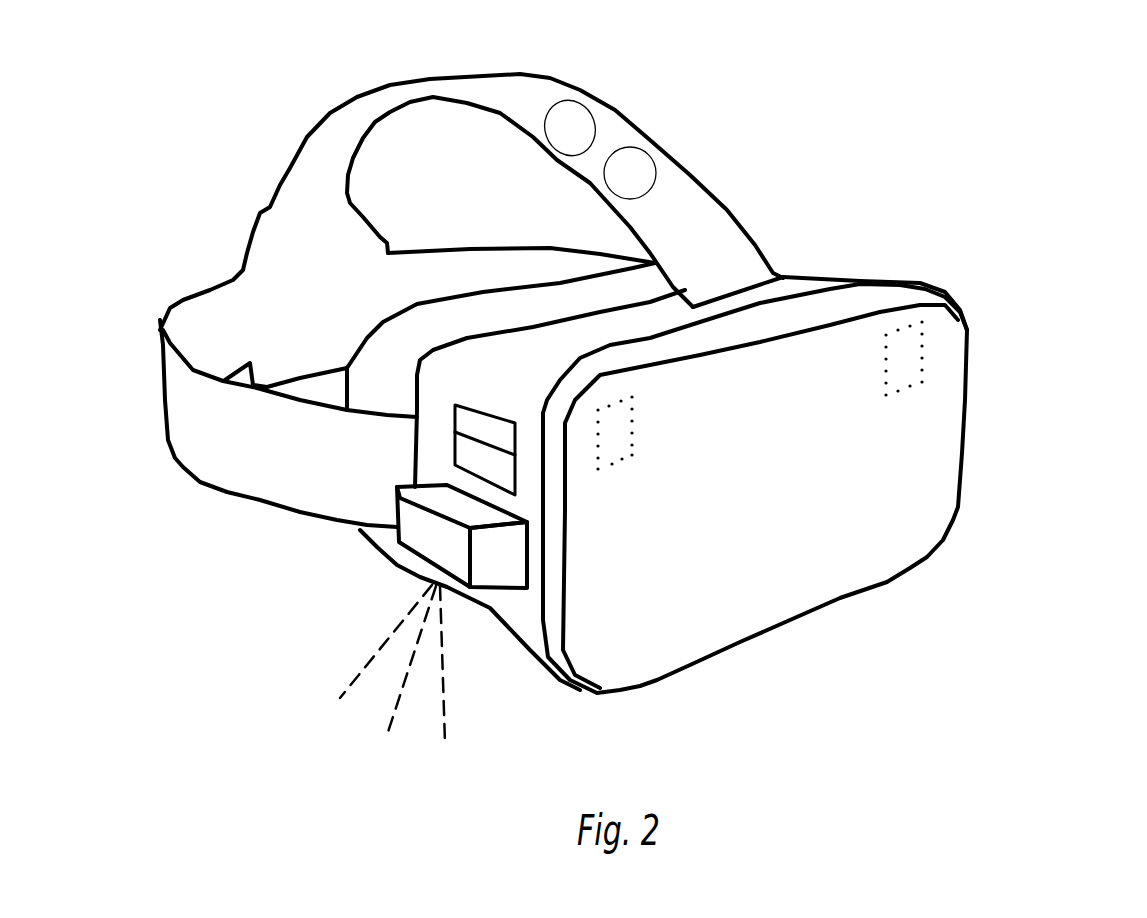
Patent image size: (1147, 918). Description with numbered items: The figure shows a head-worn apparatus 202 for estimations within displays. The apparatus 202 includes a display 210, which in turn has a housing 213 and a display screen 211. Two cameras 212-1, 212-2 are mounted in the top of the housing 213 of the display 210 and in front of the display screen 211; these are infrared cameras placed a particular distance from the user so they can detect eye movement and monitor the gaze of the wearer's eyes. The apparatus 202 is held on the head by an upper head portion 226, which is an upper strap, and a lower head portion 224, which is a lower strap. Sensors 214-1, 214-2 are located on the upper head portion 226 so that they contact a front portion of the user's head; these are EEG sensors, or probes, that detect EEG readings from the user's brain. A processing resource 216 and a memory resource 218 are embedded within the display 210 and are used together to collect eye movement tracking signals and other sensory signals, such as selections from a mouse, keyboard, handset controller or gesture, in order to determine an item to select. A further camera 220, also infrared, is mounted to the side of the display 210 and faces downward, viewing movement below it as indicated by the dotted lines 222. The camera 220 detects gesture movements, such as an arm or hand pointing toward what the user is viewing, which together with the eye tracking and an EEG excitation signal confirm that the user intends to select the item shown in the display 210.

The apparatus 202 is at (863, 140).
The display 210 is at (993, 367).
The display screen 211 is at (957, 510).
The camera 212-1 is at (633, 418).
The camera 212-2 is at (922, 340).
The housing 213 is at (807, 270).
The sensor 214-1 is at (582, 110).
The sensor 214-2 is at (647, 158).
The processing resource 216 is at (490, 413).
The memory resource 218 is at (455, 453).
The camera 220 is at (437, 580).
The dotted lines 222 is at (473, 670).
The lower head portion 224 is at (222, 490).
The upper head portion 226 is at (533, 83).